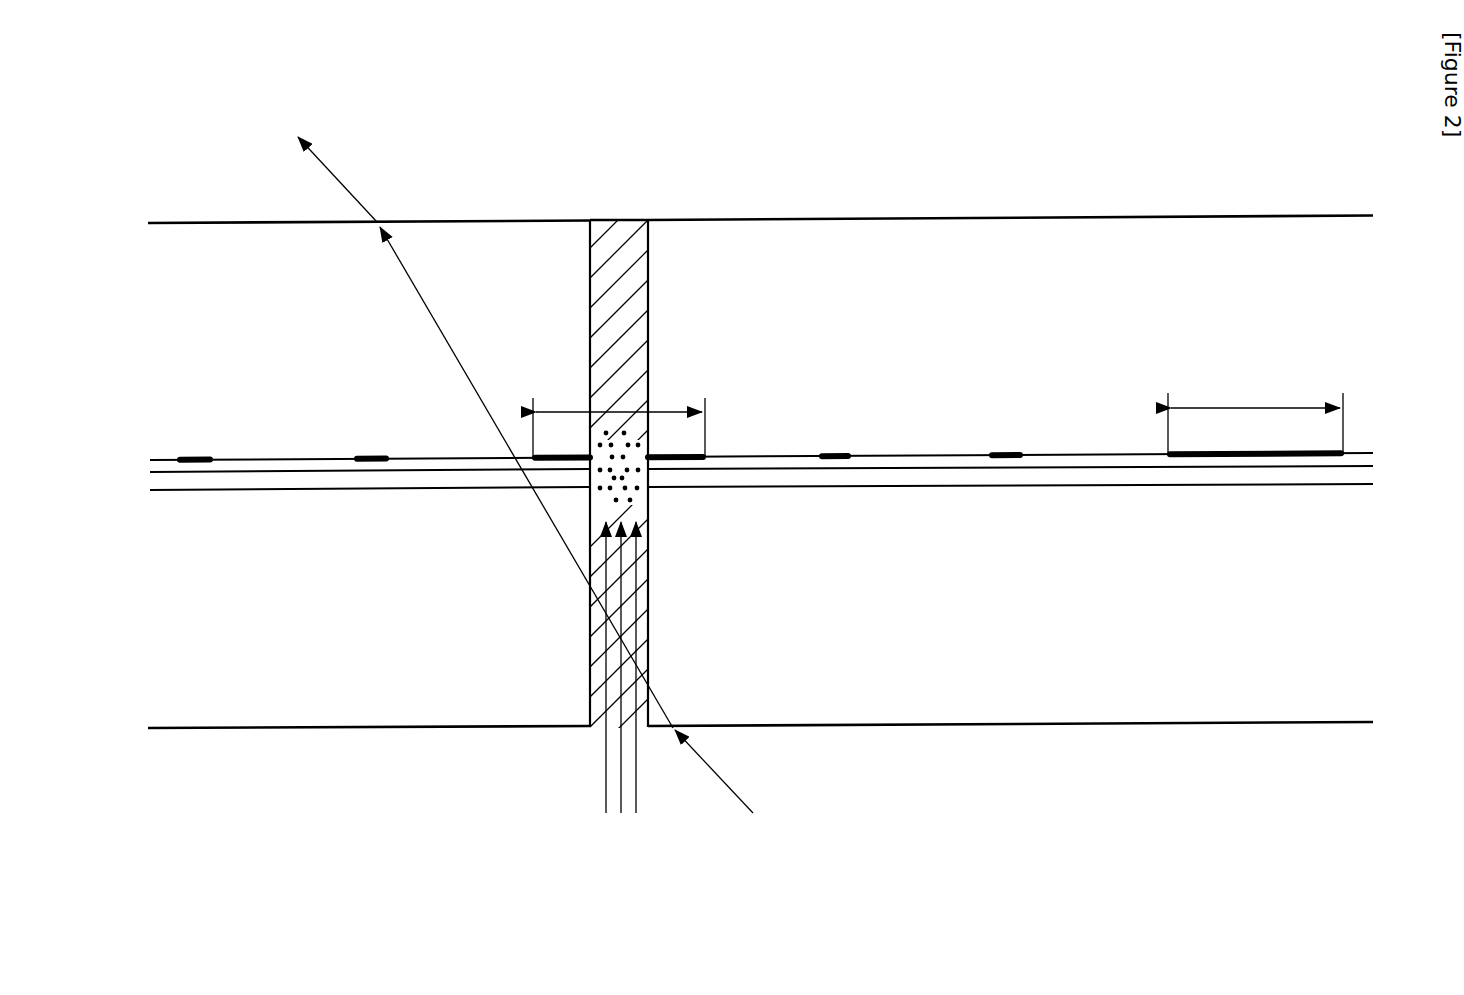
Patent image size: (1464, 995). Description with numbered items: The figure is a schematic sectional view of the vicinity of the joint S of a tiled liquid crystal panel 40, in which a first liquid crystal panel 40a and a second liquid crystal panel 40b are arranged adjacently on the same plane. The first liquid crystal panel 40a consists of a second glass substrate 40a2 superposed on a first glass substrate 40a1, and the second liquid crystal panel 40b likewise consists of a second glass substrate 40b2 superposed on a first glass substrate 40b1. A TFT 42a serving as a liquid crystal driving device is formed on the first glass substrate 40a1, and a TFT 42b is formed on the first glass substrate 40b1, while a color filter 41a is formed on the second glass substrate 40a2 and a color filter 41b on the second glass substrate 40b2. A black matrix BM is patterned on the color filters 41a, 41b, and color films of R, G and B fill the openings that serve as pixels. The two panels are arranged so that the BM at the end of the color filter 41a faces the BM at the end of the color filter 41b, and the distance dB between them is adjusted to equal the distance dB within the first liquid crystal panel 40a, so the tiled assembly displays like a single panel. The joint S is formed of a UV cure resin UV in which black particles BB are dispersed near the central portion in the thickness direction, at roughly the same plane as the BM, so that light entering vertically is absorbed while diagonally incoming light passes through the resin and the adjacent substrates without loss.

The liquid crystal panel 40 is at (823, 184).
The first liquid crystal panel 40a is at (998, 203).
The second liquid crystal panel 40b is at (479, 206).
The first glass substrate 40a1 is at (1030, 724).
The second glass substrate 40a2 is at (1172, 216).
The first glass substrate 40b1 is at (305, 728).
The second glass substrate 40b2 is at (185, 222).
The color filter 41a is at (952, 458).
The color filter 41b is at (313, 467).
The TFT 42a is at (950, 478).
The TFT 42b is at (313, 483).
The UV cure resin UV is at (640, 302).
The joint S is at (622, 219).
The black particles BB is at (640, 489).
The distance dB is at (938, 414).
The black matrix BM is at (758, 438).
The green color film G is at (600, 434).
The blue color film B is at (775, 434).
The red color film R is at (764, 434).